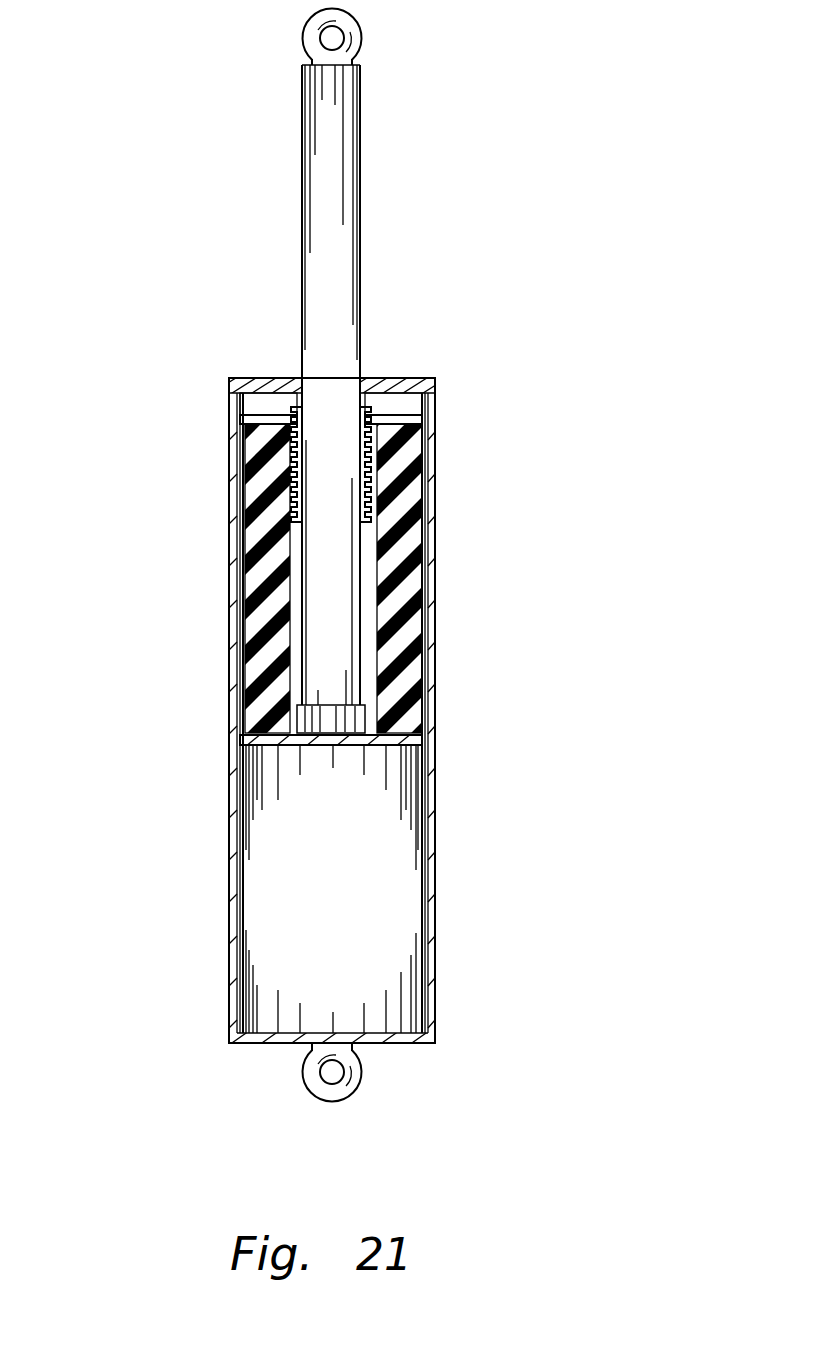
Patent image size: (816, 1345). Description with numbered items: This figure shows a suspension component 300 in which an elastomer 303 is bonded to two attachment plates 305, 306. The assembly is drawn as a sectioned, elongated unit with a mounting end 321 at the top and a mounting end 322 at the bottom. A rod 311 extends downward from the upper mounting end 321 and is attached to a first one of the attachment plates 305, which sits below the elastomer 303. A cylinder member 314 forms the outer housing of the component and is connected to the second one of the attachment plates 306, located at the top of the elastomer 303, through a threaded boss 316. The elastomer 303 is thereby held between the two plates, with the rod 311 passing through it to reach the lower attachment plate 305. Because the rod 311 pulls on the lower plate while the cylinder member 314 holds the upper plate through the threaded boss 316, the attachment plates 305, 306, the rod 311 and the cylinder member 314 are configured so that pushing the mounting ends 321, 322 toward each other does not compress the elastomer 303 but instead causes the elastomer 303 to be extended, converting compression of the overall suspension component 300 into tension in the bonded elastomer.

The suspension component 300 is at (162, 497).
The elastomer 303 is at (258, 615).
The attachment plate 305 is at (282, 742).
The attachment plate 306 is at (281, 410).
The rod 311 is at (316, 145).
The cylinder member 314 is at (230, 942).
The threaded boss 316 is at (378, 402).
The mounting end 321 is at (308, 33).
The mounting end 322 is at (310, 1077).